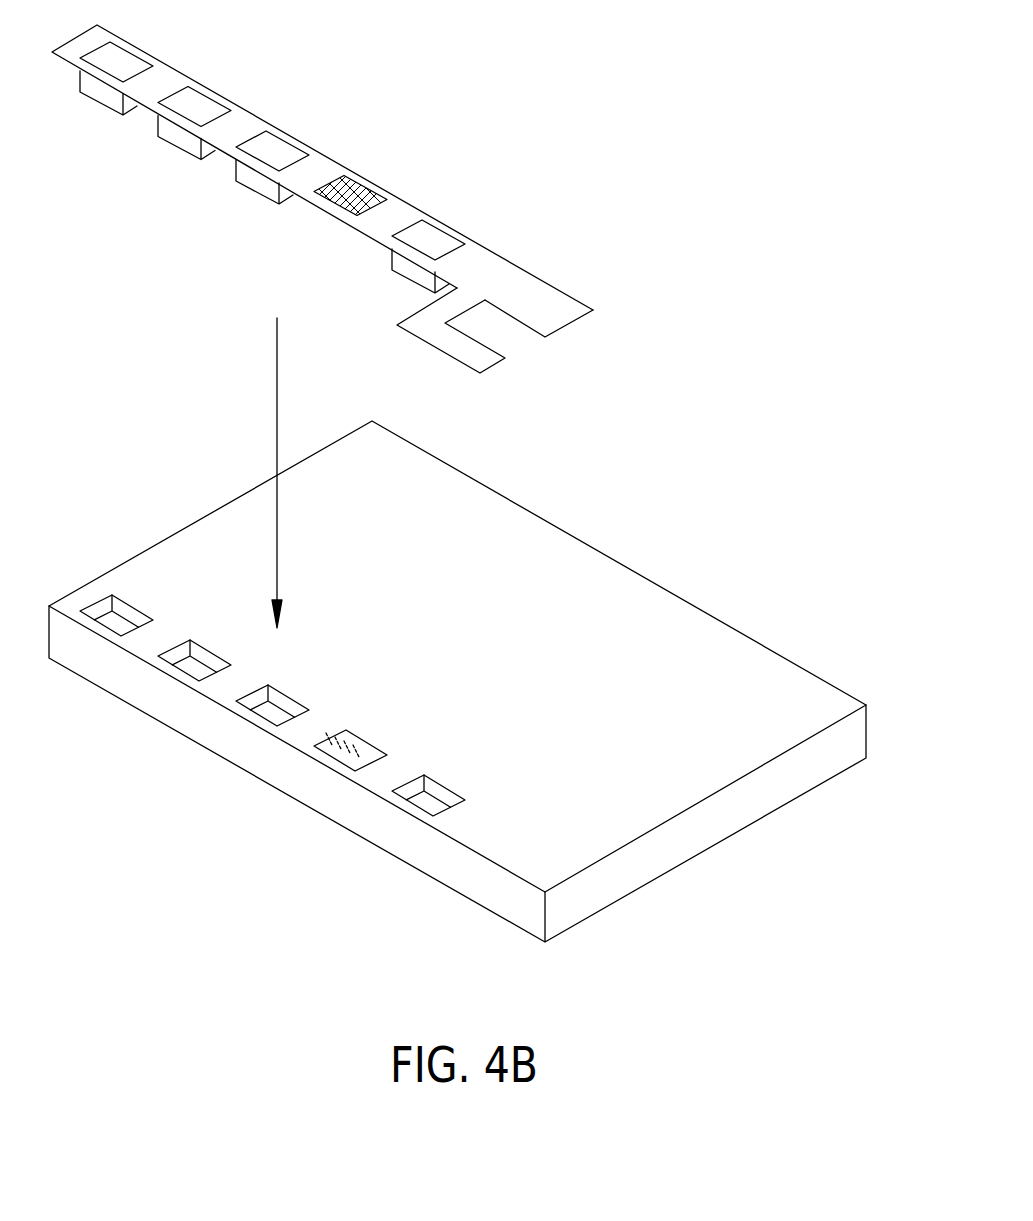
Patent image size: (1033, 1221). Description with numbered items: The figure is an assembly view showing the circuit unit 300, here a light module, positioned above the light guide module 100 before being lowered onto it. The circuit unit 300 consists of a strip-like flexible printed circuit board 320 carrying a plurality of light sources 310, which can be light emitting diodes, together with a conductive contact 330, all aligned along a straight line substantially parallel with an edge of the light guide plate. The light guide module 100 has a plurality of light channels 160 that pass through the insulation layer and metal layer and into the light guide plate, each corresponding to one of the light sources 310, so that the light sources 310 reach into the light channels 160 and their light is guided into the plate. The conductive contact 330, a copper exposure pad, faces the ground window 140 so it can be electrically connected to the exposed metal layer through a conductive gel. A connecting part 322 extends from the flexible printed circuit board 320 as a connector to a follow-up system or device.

The light guide module 100 is at (733, 595).
The ground window 140 is at (372, 748).
The light channels 160 is at (100, 627).
The circuit unit 300 is at (557, 252).
The light sources 310 is at (408, 267).
The flexible printed circuit board 320 is at (555, 312).
The connecting part 322 is at (482, 360).
The conductive contact 330 is at (367, 192).